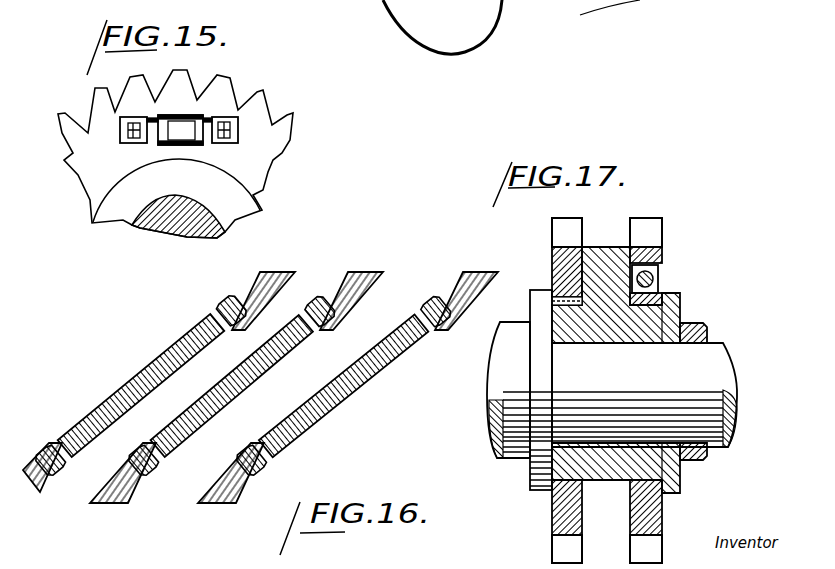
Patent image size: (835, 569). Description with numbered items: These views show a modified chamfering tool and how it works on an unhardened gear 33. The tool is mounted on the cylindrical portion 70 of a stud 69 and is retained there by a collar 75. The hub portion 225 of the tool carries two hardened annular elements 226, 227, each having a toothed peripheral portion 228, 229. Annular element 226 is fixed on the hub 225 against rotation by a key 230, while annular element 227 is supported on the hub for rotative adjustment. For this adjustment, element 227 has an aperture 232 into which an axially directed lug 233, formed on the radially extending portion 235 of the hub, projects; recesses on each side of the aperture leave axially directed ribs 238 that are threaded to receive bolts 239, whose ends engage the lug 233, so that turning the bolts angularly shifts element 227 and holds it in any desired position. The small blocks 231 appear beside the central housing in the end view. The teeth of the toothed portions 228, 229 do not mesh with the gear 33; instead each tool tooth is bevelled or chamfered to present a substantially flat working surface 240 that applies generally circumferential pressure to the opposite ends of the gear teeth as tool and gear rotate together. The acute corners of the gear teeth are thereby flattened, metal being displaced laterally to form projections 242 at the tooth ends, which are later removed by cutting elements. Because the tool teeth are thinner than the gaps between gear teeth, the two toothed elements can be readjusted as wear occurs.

In FIG. 16, the gear 33 is at (157, 386).
In FIG. 17, the stud 69 is at (502, 362).
In FIG. 15, the cylindrical portion 70 is at (168, 222).
In FIG. 17, the cylindrical portion 70 is at (717, 362).
In FIG. 17, the collar 75 is at (700, 327).
In FIG. 15, the hub portion 225 is at (110, 213).
In FIG. 17, the hub portion 225 is at (681, 303).
In FIG. 17, the annular element 226 is at (560, 258).
In FIG. 15, the annular element 227 is at (255, 165).
In FIG. 17, the annular element 227 is at (662, 248).
In FIG. 16, the toothed peripheral portion 228 is at (200, 503).
In FIG. 17, the toothed peripheral portion 228 is at (560, 548).
In FIG. 15, the toothed peripheral portion 229 is at (264, 103).
In FIG. 16, the toothed peripheral portion 229 is at (453, 290).
In FIG. 17, the toothed peripheral portion 229 is at (650, 553).
In FIG. 17, the key 230 is at (553, 313).
In FIG. 15, the contact block 231 is at (121, 134).
In FIG. 15, the aperture 232 is at (224, 120).
In FIG. 17, the aperture 232 is at (642, 255).
In FIG. 15, the lug 233 is at (182, 118).
In FIG. 17, the lug 233 is at (660, 267).
In FIG. 17, the radially extending portion 235 is at (602, 265).
In FIG. 15, the rib 238 is at (207, 140).
In FIG. 15, the bolt 239 is at (125, 122).
In FIG. 17, the bolt 239 is at (653, 282).
In FIG. 16, the working surface 240 is at (60, 446).
In FIG. 16, the projection 242 is at (222, 306).